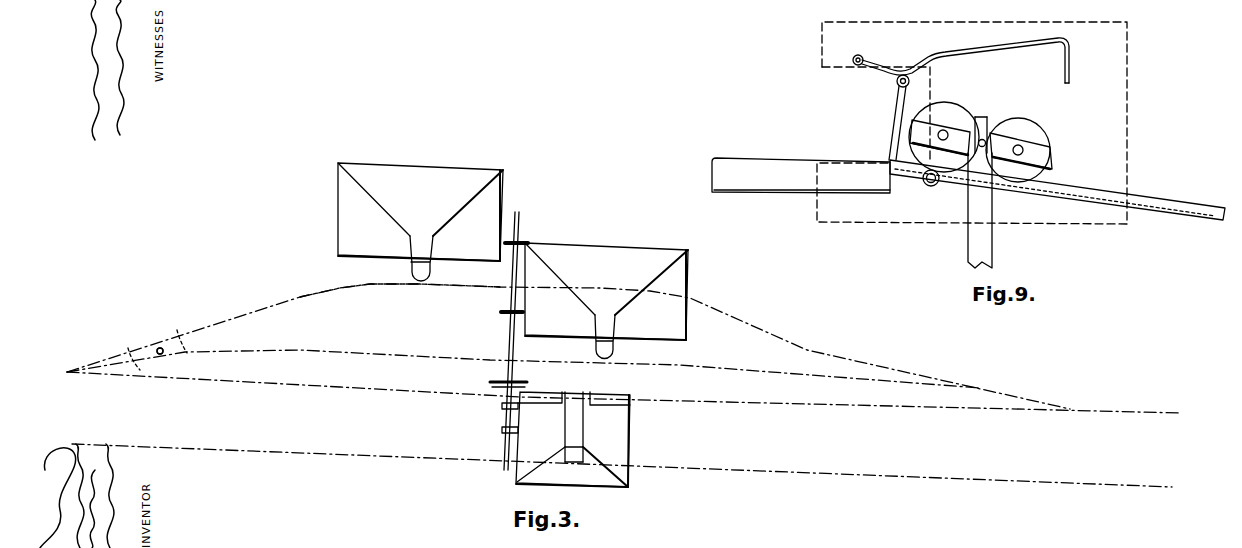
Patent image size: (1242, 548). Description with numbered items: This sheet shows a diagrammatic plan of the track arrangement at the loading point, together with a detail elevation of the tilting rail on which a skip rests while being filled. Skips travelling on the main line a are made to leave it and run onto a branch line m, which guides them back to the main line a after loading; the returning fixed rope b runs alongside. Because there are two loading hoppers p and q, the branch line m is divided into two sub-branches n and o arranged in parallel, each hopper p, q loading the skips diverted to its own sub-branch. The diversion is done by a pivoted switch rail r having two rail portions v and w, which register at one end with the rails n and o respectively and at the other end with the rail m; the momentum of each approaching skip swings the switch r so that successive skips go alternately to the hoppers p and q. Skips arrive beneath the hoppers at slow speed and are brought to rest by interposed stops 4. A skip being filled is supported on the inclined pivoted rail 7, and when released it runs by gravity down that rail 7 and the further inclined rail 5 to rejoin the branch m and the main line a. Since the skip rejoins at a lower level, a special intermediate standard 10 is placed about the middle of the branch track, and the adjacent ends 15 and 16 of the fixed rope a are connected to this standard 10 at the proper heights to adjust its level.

In FIG. 3, the loading hopper q is at (458, 173).
In FIG. 3, the loading hopper p is at (633, 253).
In FIG. 3, the sub-branch line o is at (327, 290).
In FIG. 3, the branch line m is at (93, 368).
In FIG. 3, the sub-branch line n is at (523, 361).
In FIG. 3, the main line fixed rope a is at (153, 375).
In FIG. 3, the returning fixed rope b is at (172, 447).
In FIG. 3, the switch rail r is at (164, 347).
In FIG. 3, the switch rail portion v is at (158, 354).
In FIG. 3, the switch rail portion w is at (138, 352).
In FIG. 3, the special intermediate standard 10 is at (618, 460).
In FIG. 3, the fixed rope end 15 is at (555, 404).
In FIG. 3, the fixed rope end 16 is at (605, 405).
In FIG. 9, the stop 4 is at (1077, 66).
In FIG. 9, the inclined rail 5 is at (1138, 198).
In FIG. 9, the inclined pivoted rail 7 is at (1020, 170).